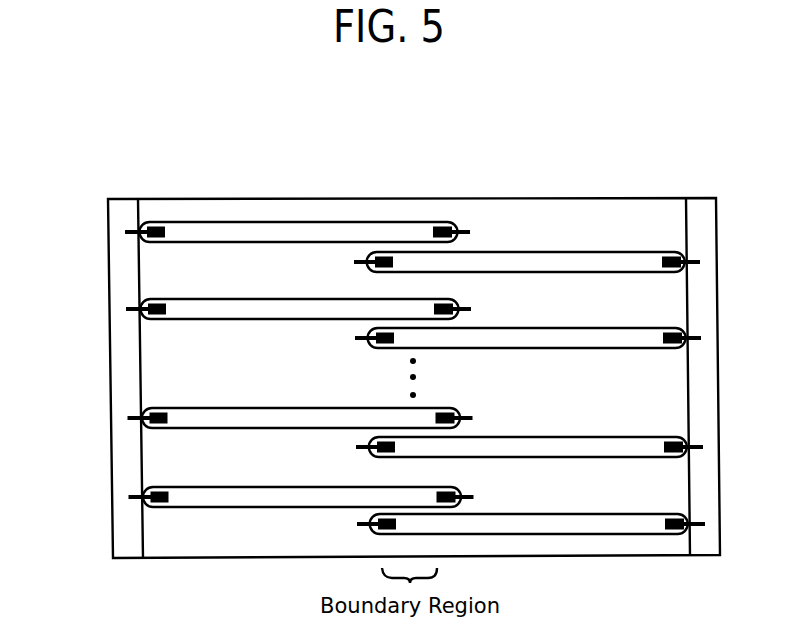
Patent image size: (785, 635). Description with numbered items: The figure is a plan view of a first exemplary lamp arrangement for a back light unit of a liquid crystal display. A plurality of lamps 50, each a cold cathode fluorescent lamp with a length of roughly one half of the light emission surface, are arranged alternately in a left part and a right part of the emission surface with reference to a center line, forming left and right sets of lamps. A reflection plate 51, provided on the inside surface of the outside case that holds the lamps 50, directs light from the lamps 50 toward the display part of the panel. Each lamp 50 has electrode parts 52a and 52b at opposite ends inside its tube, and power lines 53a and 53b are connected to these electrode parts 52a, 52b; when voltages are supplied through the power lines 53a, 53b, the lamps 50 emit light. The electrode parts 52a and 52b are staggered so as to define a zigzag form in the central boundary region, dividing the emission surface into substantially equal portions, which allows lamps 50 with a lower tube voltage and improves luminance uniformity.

The lamp 50 is at (282, 230).
The reflection plate 51 is at (617, 210).
The electrode part 52a is at (148, 240).
The electrode part 52b is at (440, 227).
The power line 53a is at (128, 232).
The power line 53b is at (465, 226).